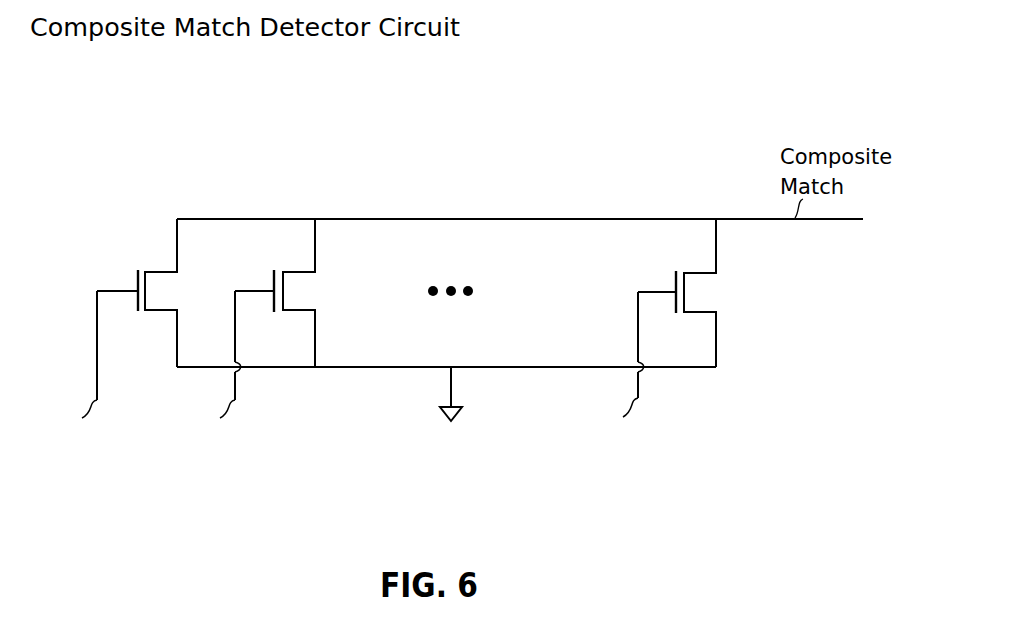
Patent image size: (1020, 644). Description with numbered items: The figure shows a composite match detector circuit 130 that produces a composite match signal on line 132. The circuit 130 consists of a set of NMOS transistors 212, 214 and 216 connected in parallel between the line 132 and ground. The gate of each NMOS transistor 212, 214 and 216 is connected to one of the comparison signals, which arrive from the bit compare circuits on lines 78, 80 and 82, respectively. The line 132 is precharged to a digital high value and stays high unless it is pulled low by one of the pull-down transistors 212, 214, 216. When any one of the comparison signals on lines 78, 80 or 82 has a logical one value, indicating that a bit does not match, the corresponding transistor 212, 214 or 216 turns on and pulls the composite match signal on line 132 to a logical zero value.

The composite match detector circuit 130 is at (340, 82).
The line 132 is at (643, 218).
The NMOS transistor 212 is at (175, 290).
The NMOS transistor 214 is at (312, 290).
The NMOS transistor 216 is at (712, 291).
The line 78 is at (97, 337).
The line 80 is at (235, 338).
The line 82 is at (638, 339).